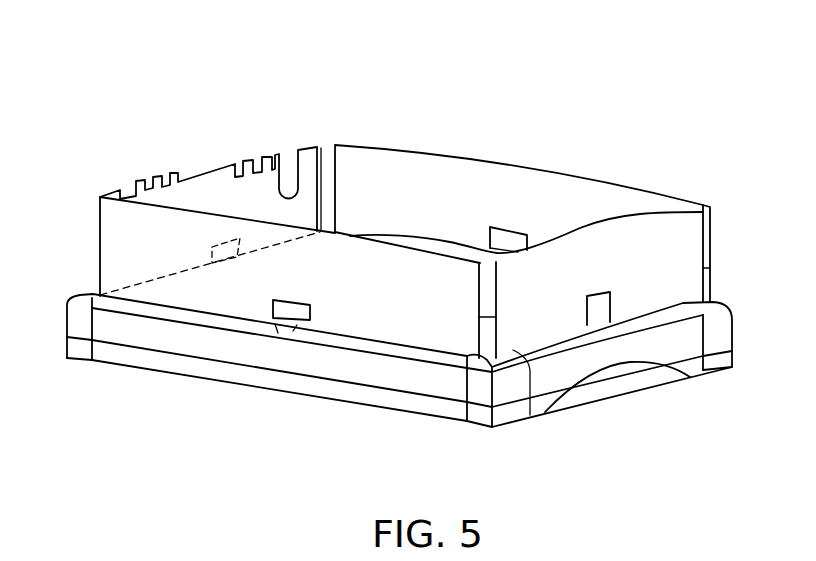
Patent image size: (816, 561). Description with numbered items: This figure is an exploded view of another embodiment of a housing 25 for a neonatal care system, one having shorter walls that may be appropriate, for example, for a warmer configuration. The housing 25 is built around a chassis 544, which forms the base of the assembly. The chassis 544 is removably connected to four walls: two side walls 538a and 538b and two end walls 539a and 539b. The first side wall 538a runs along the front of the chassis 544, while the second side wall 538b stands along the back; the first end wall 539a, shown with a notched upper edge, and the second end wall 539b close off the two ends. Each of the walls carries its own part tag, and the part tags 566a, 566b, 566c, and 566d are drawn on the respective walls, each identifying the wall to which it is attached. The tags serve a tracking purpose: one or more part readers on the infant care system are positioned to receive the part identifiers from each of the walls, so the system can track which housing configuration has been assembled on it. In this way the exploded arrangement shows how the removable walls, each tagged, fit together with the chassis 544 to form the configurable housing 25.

The housing 25 is at (463, 67).
The side wall 538a is at (375, 317).
The side wall 538b is at (602, 180).
The end wall 539a is at (195, 190).
The end wall 539b is at (545, 322).
The chassis 544 is at (457, 385).
The part tag 566a is at (273, 313).
The part tag 566b is at (600, 293).
The part tag 566c is at (500, 227).
The part tag 566d is at (223, 240).